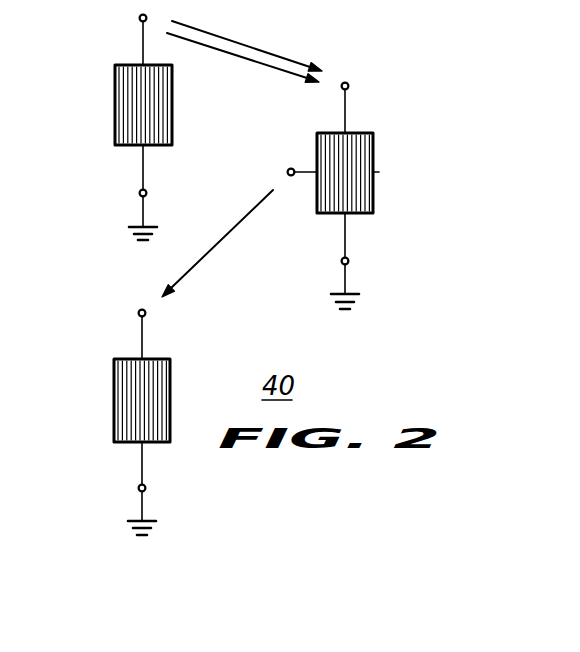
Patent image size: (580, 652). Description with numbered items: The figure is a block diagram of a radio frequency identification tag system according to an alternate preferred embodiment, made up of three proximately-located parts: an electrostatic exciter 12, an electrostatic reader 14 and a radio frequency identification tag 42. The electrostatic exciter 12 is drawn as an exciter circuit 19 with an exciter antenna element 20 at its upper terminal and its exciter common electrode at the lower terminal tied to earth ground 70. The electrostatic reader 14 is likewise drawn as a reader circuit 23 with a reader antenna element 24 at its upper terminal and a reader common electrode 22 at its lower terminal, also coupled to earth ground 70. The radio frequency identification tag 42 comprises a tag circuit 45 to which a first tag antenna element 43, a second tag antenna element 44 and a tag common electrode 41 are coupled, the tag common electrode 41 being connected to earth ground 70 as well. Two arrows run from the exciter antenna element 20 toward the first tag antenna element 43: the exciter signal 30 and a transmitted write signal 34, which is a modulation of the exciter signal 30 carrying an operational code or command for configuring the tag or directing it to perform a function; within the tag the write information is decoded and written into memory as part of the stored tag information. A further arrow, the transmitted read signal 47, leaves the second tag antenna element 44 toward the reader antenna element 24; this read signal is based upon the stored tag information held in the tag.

The electrostatic exciter 12 is at (95, 72).
The electrostatic reader 14 is at (92, 368).
The exciter circuit 19 is at (115, 103).
The exciter antenna element 20 is at (139, 18).
The reader common electrode 22 is at (138, 488).
The reader circuit 23 is at (114, 398).
The reader antenna element 24 is at (138, 313).
The exciter signal 30 is at (239, 56).
The transmitted write signal 34 is at (255, 50).
The tag common electrode 41 is at (349, 261).
The radio frequency identification tag 42 is at (393, 139).
The first tag antenna element 43 is at (349, 86).
The second tag antenna element 44 is at (287, 171).
The tag circuit 45 is at (379, 172).
The transmitted read signal 47 is at (216, 240).
The earth ground 70 is at (129, 240).